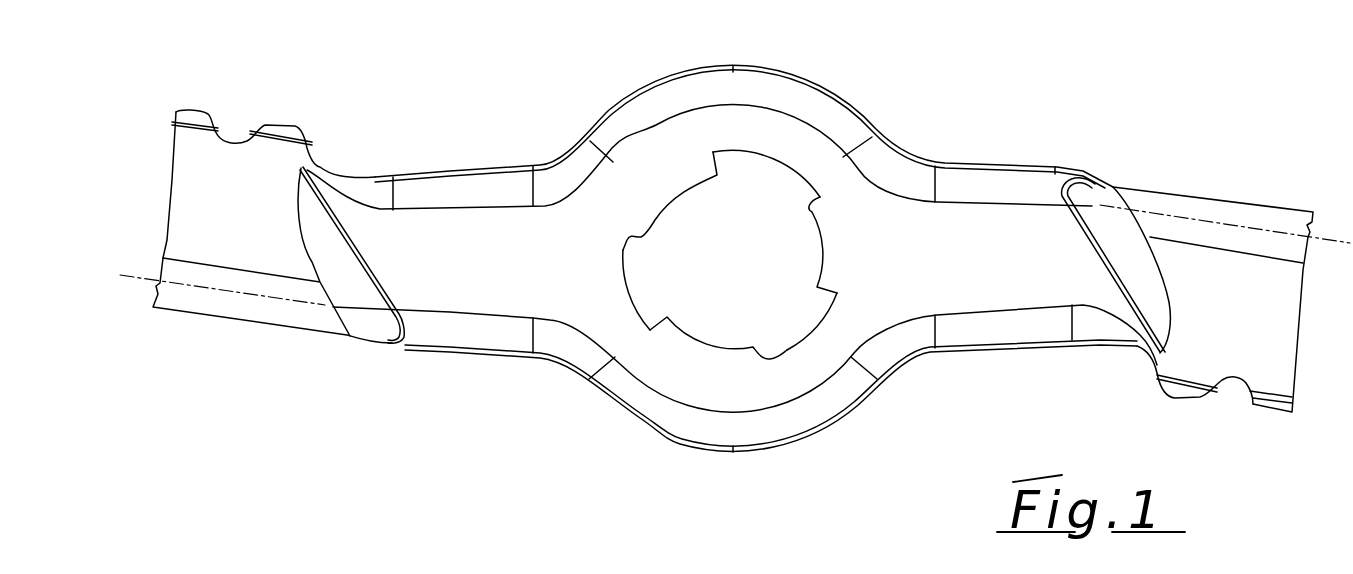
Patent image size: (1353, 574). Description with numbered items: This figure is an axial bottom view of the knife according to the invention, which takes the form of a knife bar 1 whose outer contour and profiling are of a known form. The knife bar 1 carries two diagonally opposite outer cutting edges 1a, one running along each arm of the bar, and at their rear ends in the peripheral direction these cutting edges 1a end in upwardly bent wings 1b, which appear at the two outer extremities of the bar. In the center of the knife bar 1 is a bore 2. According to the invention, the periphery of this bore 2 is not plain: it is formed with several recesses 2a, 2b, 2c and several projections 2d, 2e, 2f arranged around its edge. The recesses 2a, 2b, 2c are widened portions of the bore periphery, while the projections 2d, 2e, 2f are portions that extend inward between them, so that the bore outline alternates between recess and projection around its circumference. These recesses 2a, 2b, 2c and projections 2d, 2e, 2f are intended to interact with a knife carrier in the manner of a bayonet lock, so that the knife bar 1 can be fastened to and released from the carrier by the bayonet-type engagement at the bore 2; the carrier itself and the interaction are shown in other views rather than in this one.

The knife bar 1 is at (548, 145).
The outer cutting edge 1a is at (230, 318).
The upwardly bent wing 1b is at (277, 123).
The bore 2 is at (733, 235).
The recess 2a is at (780, 153).
The recess 2b is at (827, 335).
The recess 2c is at (625, 295).
The projection 2d is at (820, 253).
The projection 2e is at (707, 343).
The projection 2f is at (680, 197).